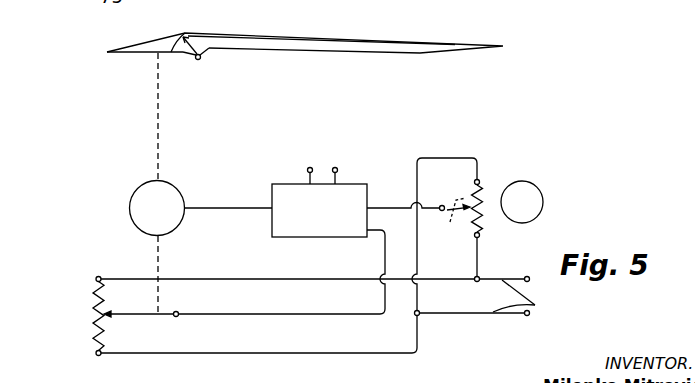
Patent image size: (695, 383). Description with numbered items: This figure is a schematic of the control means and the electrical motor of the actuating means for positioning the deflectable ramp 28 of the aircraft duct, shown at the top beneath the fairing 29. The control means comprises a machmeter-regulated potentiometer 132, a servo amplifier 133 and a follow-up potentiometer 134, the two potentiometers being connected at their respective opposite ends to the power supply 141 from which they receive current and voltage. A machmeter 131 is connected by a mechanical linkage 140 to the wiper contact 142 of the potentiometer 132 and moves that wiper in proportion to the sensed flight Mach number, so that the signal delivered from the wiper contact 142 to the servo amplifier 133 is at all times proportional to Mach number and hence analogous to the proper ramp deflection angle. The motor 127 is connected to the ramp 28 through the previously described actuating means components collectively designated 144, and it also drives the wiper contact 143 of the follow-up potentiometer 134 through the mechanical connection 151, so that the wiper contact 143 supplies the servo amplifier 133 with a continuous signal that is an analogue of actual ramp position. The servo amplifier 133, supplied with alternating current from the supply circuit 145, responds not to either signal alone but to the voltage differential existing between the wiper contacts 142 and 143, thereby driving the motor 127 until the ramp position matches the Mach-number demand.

The ramp 28 is at (154, 40).
The fairing 29 is at (307, 33).
The actuating means components 144 is at (158, 107).
The motor 127 is at (143, 219).
The servo amplifier 133 is at (305, 219).
The supply circuit 145 is at (312, 168).
The mechanical linkage 140 is at (483, 197).
The machmeter 131 is at (490, 202).
The wiper contact 142 is at (457, 220).
The machmeter-regulated potentiometer 132 is at (481, 234).
The mechanical connection 151 is at (158, 260).
The follow-up potentiometer 134 is at (93, 323).
The wiper contact 143 is at (128, 315).
The power supply 141 is at (500, 301).